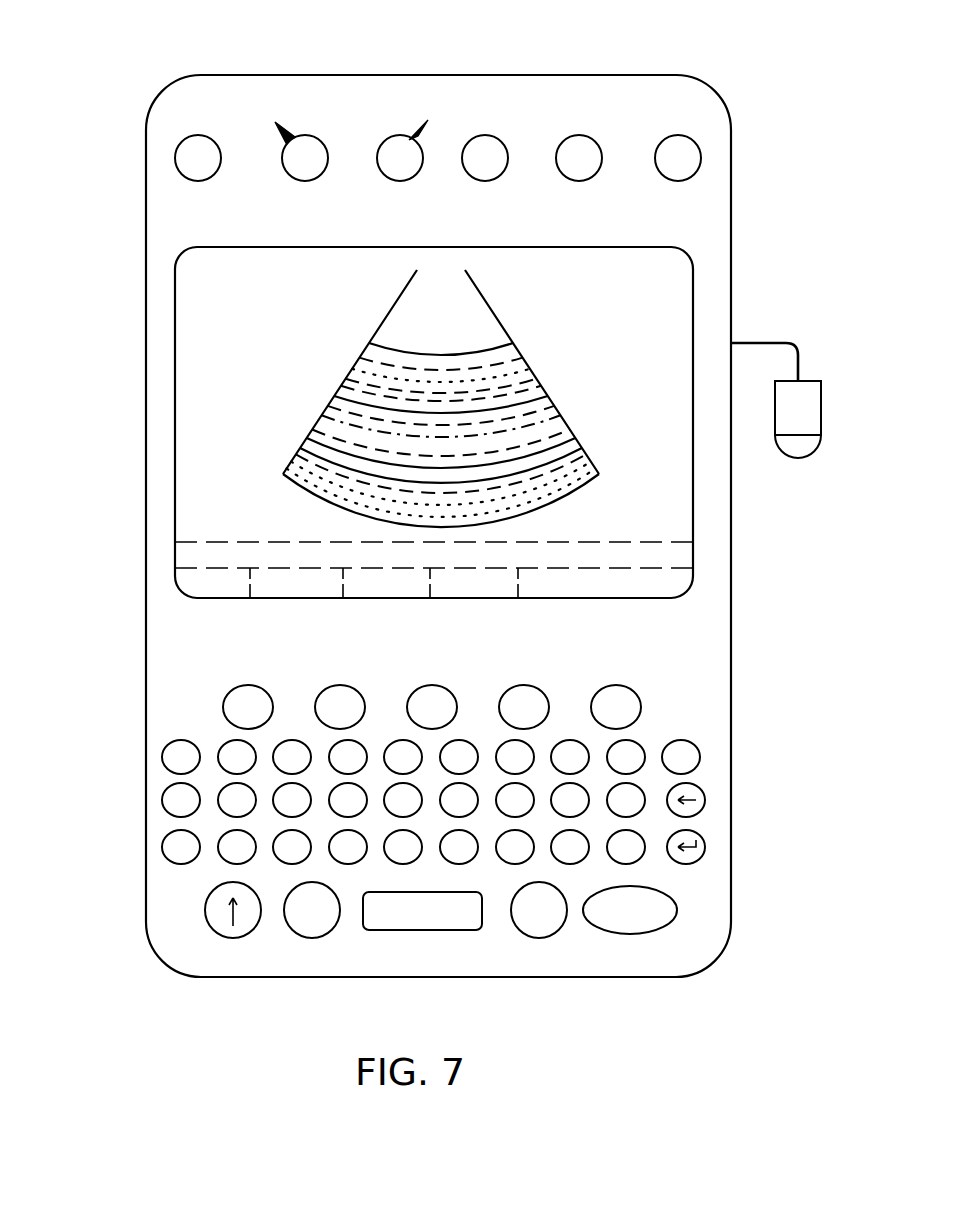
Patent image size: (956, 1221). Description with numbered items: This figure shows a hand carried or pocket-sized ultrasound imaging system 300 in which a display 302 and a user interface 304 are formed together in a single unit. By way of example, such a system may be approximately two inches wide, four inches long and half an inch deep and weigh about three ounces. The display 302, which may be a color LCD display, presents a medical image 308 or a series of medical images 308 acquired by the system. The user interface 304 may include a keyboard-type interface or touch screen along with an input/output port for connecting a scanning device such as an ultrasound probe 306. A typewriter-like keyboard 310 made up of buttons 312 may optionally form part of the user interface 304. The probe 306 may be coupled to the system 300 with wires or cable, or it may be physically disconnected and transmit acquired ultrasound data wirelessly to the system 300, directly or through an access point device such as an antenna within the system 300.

The ultrasound imaging system 300 is at (168, 78).
The display 302 is at (100, 247).
The user interface 304 is at (758, 541).
The ultrasound probe 306 is at (814, 380).
The medical image 308 is at (364, 350).
The keyboard 310 is at (117, 742).
The buttons 312 is at (182, 738).